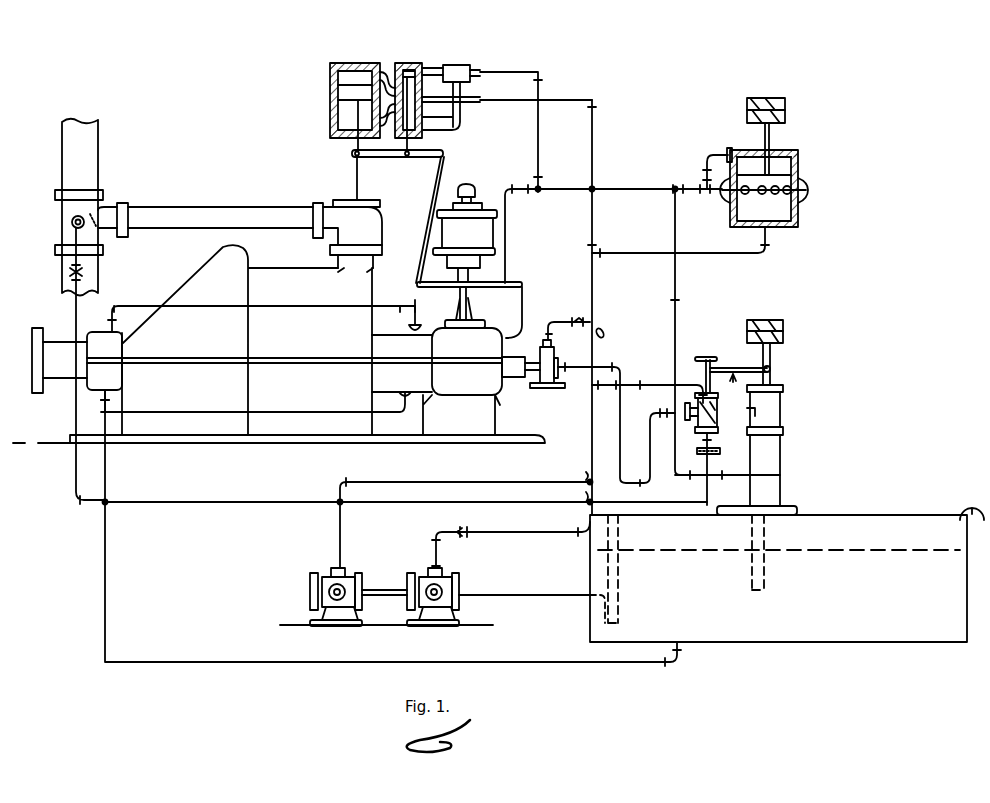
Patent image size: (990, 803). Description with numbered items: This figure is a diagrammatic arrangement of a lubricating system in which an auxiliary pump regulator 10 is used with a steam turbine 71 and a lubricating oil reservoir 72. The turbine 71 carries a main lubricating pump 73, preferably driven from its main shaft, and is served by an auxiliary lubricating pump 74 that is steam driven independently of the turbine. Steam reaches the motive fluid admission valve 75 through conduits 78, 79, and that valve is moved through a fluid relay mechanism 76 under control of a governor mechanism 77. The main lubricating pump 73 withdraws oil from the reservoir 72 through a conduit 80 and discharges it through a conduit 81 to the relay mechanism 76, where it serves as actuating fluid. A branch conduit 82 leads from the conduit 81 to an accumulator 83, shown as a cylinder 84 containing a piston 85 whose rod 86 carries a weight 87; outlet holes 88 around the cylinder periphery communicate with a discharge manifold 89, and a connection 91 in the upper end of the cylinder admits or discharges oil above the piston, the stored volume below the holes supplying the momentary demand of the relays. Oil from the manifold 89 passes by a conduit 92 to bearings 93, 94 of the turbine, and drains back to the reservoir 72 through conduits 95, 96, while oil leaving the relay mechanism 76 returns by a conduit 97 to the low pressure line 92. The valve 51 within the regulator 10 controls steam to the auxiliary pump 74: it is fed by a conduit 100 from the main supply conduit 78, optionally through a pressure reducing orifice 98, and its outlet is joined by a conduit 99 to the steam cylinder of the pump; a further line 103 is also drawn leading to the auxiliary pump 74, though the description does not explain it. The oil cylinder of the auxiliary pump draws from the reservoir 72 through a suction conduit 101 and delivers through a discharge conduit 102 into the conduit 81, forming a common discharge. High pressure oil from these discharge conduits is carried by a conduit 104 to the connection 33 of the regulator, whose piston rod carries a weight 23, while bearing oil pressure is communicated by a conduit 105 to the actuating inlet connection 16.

The auxiliary pump regulator 10 is at (782, 418).
The actuating inlet connection 16 is at (738, 477).
The weight 23 is at (785, 330).
The connection 33 is at (752, 412).
The valve 51 is at (712, 412).
The steam turbine 71 is at (190, 283).
The lubricating oil reservoir 72 is at (868, 517).
The main lubricating pump 73 is at (535, 330).
The auxiliary lubricating pump 74 is at (360, 575).
The motive fluid admission valve 75 is at (330, 215).
The fluid relay mechanism 76 is at (330, 95).
The governor mechanism 77 is at (470, 205).
The conduit 78 is at (100, 136).
The conduit 79 is at (212, 207).
The conduit 80 is at (622, 415).
The conduit 81 is at (594, 283).
The branch conduit 82 is at (770, 253).
The accumulator 83 is at (797, 225).
The cylinder 84 is at (795, 158).
The piston 85 is at (780, 178).
The rod 86 is at (772, 138).
The weight 87 is at (787, 112).
The outlet holes 88 is at (792, 203).
The discharge manifold 89 is at (808, 190).
The connection 91 is at (720, 150).
The conduit 92 is at (652, 190).
The bearing 93 is at (110, 348).
The bearing 94 is at (398, 352).
The conduit 95 is at (212, 410).
The conduit 96 is at (103, 576).
The conduit 97 is at (540, 82).
The orifice 98 is at (720, 452).
The conduit 99 is at (460, 482).
The conduit 100 is at (250, 502).
The suction conduit 101 is at (505, 595).
The discharge conduit 102 is at (586, 462).
The pipe 103 is at (470, 532).
The conduit 104 is at (650, 385).
The conduit 105 is at (678, 293).